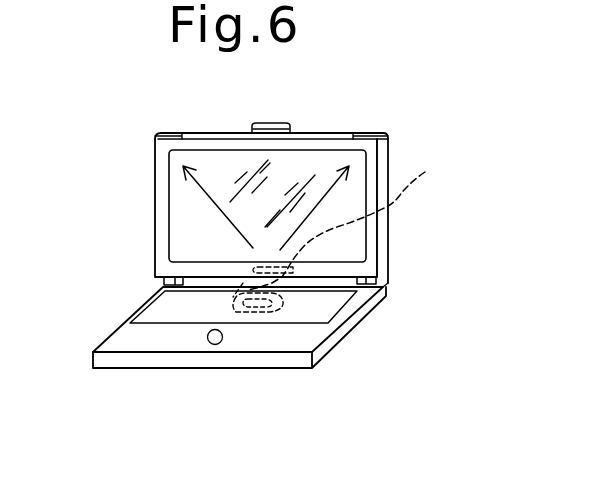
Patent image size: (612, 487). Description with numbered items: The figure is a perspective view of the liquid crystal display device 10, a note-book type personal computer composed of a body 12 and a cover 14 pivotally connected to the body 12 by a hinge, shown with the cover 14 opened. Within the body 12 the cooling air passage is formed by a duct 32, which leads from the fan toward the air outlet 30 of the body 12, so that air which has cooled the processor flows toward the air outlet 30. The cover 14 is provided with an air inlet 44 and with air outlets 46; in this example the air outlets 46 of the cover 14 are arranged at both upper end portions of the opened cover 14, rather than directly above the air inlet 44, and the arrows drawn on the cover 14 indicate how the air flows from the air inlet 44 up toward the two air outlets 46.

The liquid crystal display device 10 is at (418, 131).
The body 12 is at (342, 326).
The cover 14 is at (386, 220).
The air outlet 30 is at (272, 288).
The duct 32 is at (225, 302).
The air inlet 44 is at (353, 225).
The air outlet 46 is at (176, 133).